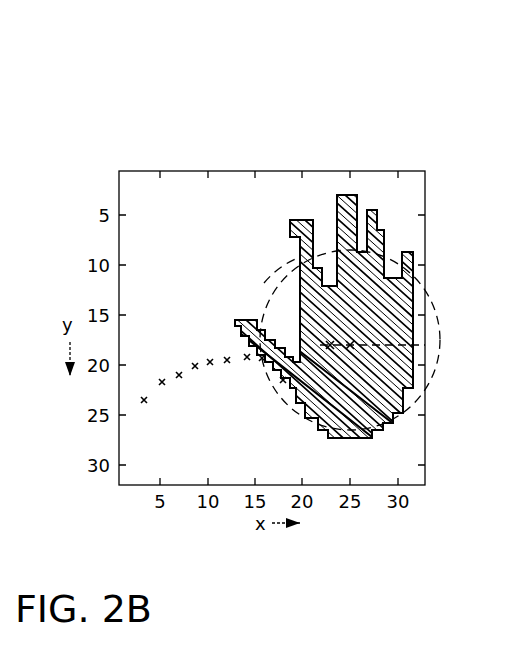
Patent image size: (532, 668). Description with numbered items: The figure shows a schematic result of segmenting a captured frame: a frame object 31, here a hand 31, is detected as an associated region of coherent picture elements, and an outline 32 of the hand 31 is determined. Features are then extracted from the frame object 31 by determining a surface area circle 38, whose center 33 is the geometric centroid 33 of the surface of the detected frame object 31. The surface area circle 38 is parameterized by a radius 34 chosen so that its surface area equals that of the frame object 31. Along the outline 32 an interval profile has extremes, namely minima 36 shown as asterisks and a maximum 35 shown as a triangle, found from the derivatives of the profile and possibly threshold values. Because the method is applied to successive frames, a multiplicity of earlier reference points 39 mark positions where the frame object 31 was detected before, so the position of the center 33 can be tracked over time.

The frame object 31 is at (390, 419).
The outline 32 is at (417, 295).
The center 33 is at (351, 352).
The radius 34 is at (380, 352).
The maximum 35 is at (235, 318).
The minimum 36 is at (334, 286).
The surface area circle 38 is at (283, 264).
The earlier reference points 39 is at (281, 372).